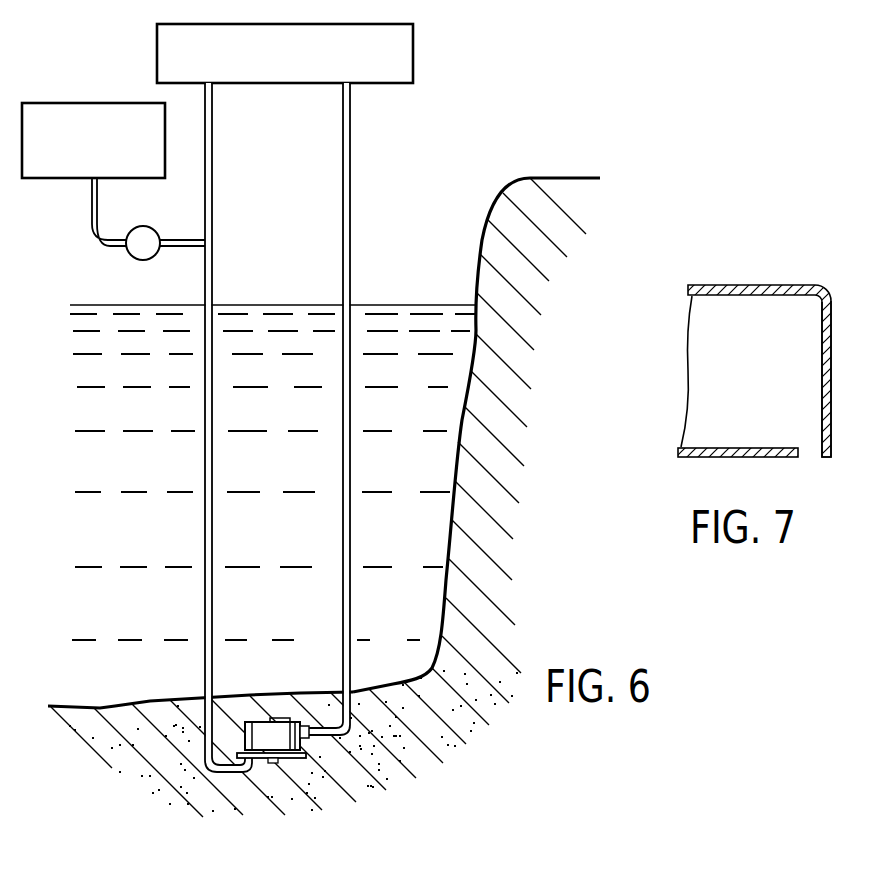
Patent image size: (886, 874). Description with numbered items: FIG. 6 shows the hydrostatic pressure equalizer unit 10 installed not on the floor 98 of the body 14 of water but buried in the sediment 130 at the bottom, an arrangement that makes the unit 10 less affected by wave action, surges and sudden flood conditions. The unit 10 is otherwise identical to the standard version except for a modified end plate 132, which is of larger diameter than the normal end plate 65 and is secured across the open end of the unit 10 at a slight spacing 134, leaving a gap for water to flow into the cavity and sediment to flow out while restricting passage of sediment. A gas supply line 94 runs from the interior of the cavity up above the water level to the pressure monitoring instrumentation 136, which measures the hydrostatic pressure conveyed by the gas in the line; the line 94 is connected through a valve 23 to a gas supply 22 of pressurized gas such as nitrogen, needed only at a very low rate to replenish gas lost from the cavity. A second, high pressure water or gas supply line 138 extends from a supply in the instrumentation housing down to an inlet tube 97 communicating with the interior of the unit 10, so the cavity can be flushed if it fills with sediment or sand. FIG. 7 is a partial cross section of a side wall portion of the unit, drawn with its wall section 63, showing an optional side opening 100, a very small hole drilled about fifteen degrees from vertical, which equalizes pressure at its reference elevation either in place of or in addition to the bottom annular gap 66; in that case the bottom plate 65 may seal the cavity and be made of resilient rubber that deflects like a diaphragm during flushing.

In FIG. 6, the hydrostatic pressure equalizer unit 10 is at (262, 722).
In FIG. 6, the body of water 14 is at (378, 327).
In FIG. 6, the gas supply 22 is at (100, 102).
In FIG. 6, the valve 23 is at (128, 256).
In FIG. 6, the gas supply line 94 is at (205, 447).
In FIG. 6, the inlet tube 97 is at (309, 724).
In FIG. 6, the floor 98 is at (121, 703).
In FIG. 6, the sediment 130 is at (393, 687).
In FIG. 6, the modified end plate 132 is at (277, 763).
In FIG. 6, the spacing 134 is at (306, 757).
In FIG. 6, the pressure monitoring instrumentation 136 is at (413, 62).
In FIG. 6, the high pressure water or gas supply line 138 is at (352, 147).
In FIG. 7, the top wall 63 is at (728, 283).
In FIG. 7, the end plate 65 is at (738, 448).
In FIG. 7, the annular gap 66 is at (812, 452).
In FIG. 7, the side opening 100 is at (822, 345).